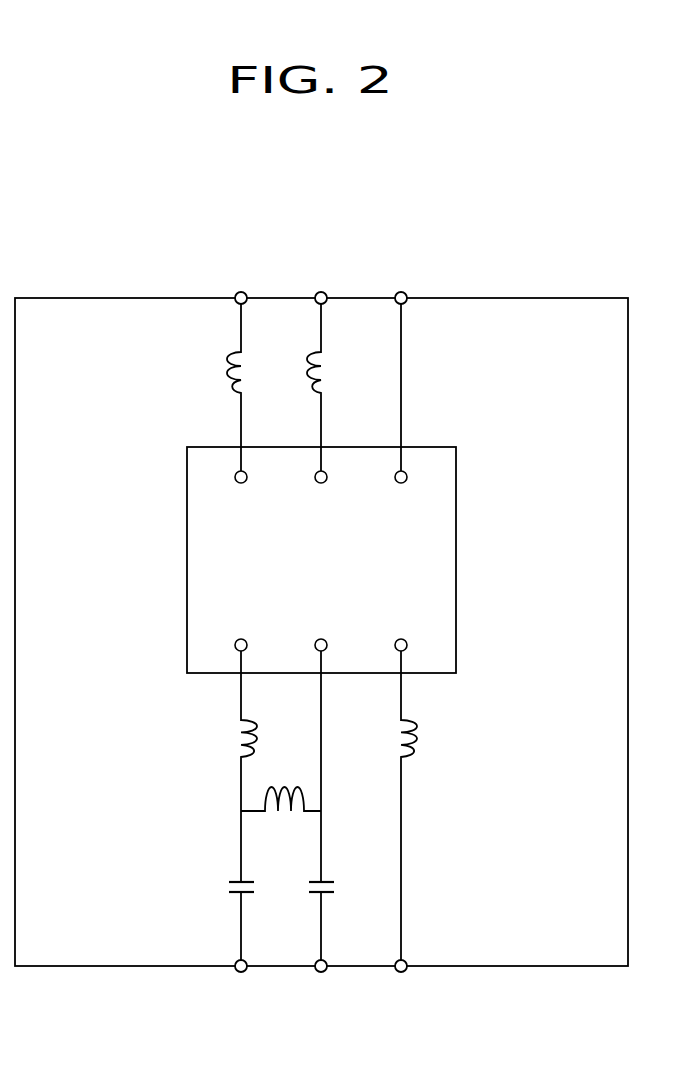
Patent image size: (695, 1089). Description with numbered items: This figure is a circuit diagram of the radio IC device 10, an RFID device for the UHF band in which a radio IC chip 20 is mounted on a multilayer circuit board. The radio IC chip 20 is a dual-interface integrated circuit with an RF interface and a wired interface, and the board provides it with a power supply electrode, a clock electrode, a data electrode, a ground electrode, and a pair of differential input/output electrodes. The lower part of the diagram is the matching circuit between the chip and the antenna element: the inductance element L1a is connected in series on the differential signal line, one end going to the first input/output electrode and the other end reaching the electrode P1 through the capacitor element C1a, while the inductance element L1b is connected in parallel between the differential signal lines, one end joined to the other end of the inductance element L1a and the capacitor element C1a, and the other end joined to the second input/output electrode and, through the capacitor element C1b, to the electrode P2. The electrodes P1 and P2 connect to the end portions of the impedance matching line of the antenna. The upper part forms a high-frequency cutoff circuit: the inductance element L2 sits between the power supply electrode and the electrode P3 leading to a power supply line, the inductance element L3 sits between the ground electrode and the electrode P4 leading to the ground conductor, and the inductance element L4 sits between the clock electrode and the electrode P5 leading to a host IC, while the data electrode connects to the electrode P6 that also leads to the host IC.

The radio IC device 10 is at (93, 235).
The radio IC chip 20 is at (430, 447).
The electrode P1 is at (244, 990).
The electrode P2 is at (322, 990).
The electrode P3 is at (405, 990).
The electrode P4 is at (240, 278).
The electrode P5 is at (320, 278).
The electrode P6 is at (400, 278).
The inductance element L1a is at (220, 742).
The inductance element L1b is at (281, 781).
The inductance element L2 is at (434, 819).
The inductance element L3 is at (213, 372).
The inductance element L4 is at (292, 372).
The capacitor element C1a is at (218, 888).
The capacitor element C1b is at (349, 819).